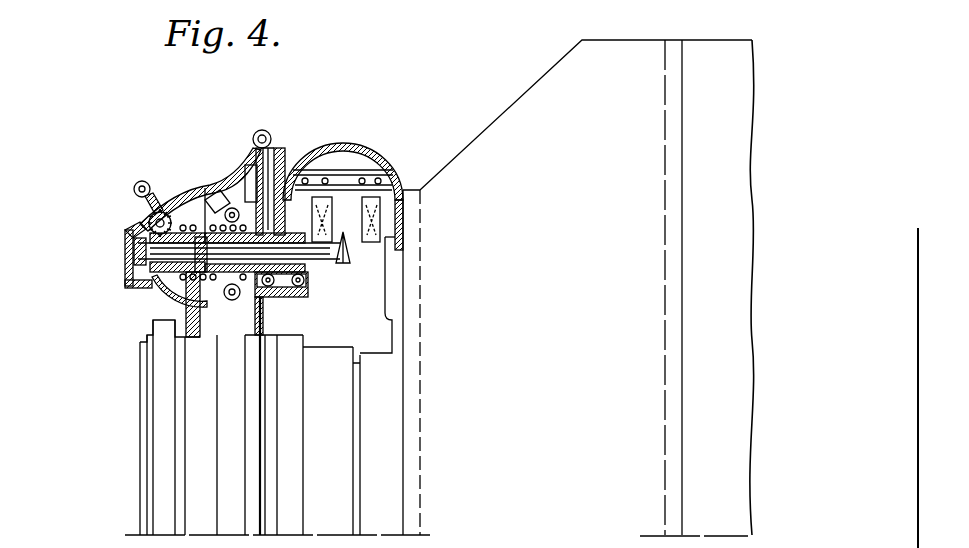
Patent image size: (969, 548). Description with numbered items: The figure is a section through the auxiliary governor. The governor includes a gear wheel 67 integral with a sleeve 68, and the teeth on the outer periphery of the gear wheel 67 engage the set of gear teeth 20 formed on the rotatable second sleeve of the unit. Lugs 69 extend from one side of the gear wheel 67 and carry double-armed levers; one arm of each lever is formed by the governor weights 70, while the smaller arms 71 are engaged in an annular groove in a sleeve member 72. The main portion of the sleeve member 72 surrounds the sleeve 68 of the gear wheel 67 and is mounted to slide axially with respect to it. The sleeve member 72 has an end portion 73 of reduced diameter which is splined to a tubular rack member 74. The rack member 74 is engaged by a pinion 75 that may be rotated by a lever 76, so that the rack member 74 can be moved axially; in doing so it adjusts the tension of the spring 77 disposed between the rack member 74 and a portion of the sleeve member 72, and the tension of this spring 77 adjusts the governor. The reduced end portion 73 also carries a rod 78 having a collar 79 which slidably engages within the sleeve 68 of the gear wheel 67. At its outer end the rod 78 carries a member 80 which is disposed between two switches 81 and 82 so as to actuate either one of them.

The set of gear teeth 20 is at (253, 337).
The gear wheel 67 is at (265, 316).
The sleeve 68 is at (228, 344).
The lugs 69 is at (238, 300).
The governor weights 70 is at (203, 186).
The smaller arms 71 is at (216, 203).
The sleeve member 72 is at (172, 302).
The end portion of reduced diameter 73 is at (134, 263).
The tubular rack member 74 is at (140, 236).
The pinion 75 is at (162, 202).
The lever 76 is at (133, 190).
The spring 77 is at (230, 182).
The rod 78 is at (179, 291).
The collar 79 is at (320, 268).
The member 80 is at (345, 256).
The switch 81 is at (327, 197).
The switch 82 is at (408, 183).